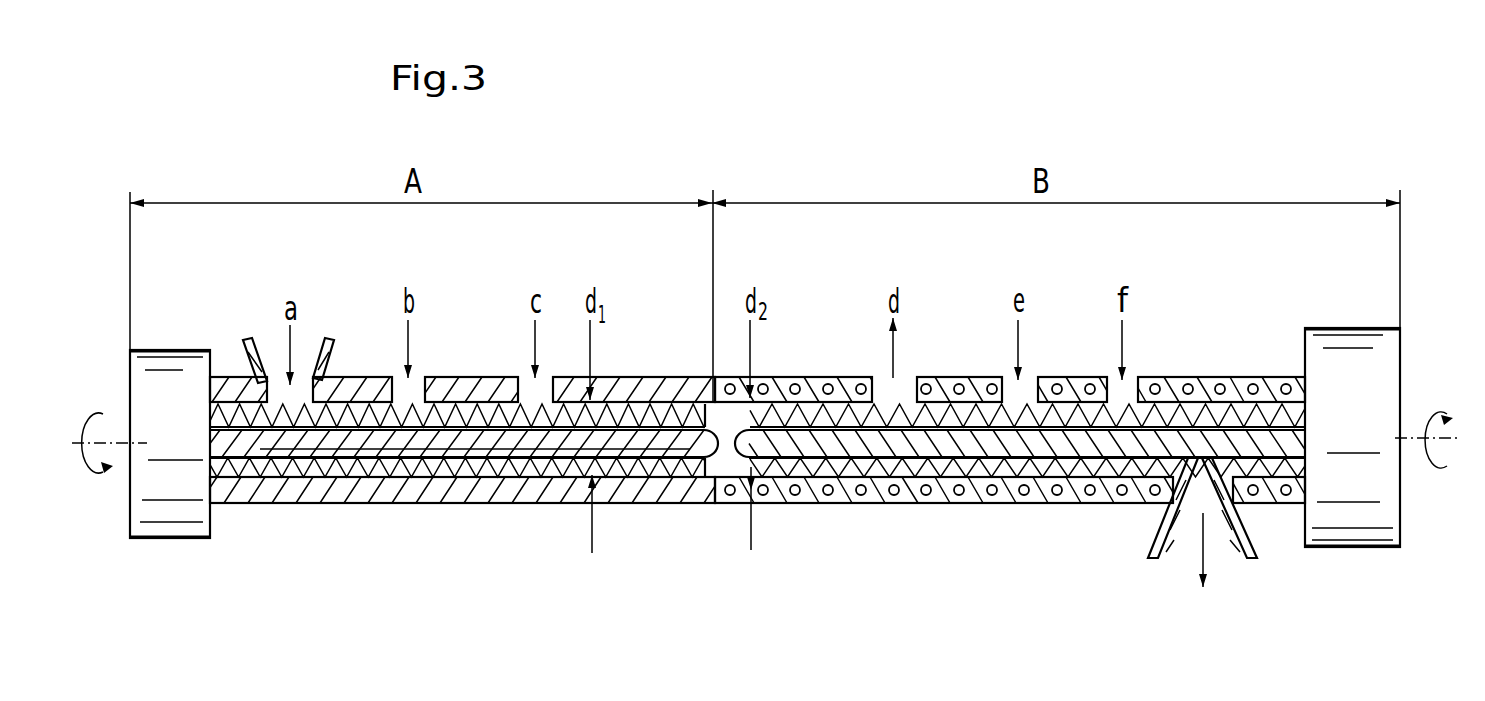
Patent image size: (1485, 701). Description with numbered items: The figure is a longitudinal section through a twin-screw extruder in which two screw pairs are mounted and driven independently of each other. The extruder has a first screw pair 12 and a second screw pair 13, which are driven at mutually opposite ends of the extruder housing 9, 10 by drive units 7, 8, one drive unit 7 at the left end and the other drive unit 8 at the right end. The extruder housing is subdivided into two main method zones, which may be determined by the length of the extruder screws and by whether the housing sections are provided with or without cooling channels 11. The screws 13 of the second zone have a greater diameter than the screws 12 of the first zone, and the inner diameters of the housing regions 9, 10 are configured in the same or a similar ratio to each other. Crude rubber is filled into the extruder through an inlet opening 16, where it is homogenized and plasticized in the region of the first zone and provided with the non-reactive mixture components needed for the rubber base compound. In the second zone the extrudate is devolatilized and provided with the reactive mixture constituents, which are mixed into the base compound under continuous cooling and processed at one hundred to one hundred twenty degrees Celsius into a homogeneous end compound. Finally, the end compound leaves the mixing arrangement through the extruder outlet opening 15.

The drive unit 7 is at (175, 525).
The drive unit 8 is at (1347, 538).
The extruder housing 9 is at (521, 492).
The extruder housing 10 is at (943, 490).
The cooling channels 11 is at (1095, 503).
The screw pair 12 is at (618, 443).
The screw pair 13 is at (805, 443).
The extruder outlet opening 15 is at (1250, 558).
The inlet opening 16 is at (256, 340).